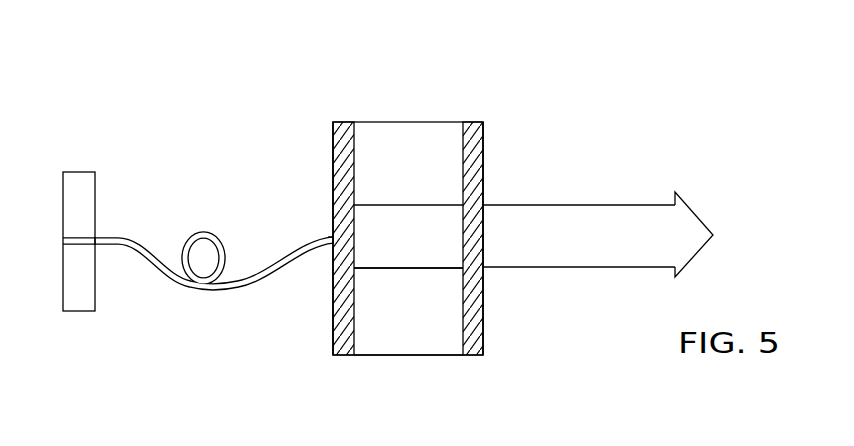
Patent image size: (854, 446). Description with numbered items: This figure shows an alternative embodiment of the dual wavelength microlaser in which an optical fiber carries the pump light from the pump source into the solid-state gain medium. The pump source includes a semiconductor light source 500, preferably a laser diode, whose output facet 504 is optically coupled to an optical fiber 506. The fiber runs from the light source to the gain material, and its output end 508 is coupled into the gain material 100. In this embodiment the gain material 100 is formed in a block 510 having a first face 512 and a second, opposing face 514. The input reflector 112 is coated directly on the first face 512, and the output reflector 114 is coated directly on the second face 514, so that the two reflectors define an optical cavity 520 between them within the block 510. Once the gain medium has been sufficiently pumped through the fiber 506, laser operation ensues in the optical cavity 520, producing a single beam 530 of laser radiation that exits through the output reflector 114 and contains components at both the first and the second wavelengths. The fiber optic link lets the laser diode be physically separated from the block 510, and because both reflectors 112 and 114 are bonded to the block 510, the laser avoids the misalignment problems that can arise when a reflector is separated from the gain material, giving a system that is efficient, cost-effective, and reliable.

The semiconductor light source 500 is at (78, 176).
The output facet 504 is at (96, 238).
The optical fiber 506 is at (198, 297).
The output end 508 is at (328, 246).
The block 510 is at (412, 122).
The first face 512 is at (345, 130).
The second face 514 is at (473, 122).
The input reflector 112 is at (333, 147).
The output reflector 114 is at (483, 143).
The optical cavity 520 is at (429, 248).
The gain material 100 is at (446, 336).
The single beam 530 is at (540, 253).